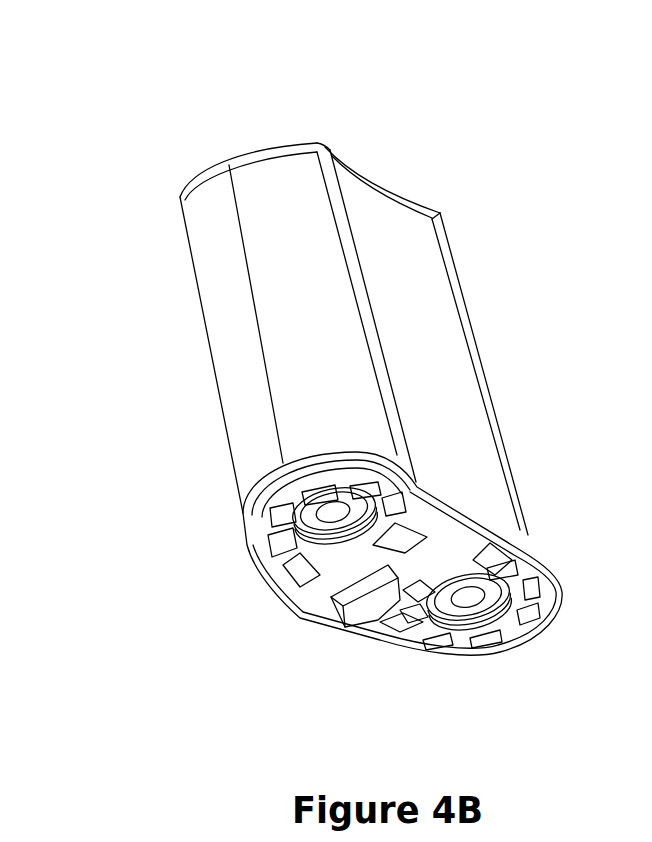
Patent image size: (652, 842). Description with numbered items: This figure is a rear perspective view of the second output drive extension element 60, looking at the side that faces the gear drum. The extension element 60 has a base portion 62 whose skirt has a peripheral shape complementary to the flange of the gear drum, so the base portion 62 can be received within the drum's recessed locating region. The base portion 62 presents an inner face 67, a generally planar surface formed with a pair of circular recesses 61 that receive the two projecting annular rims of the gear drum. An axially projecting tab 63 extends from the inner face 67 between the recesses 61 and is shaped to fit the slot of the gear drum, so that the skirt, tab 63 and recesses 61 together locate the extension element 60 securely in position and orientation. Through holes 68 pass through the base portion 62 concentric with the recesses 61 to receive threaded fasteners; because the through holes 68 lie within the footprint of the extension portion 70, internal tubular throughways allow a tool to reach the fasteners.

The second output drive extension element 60 is at (444, 155).
The extension portion 70 is at (213, 247).
The base portion 62 is at (560, 570).
The inner face 67 is at (270, 565).
The circular recesses 61 is at (315, 530).
The through holes 68 is at (333, 517).
The axially projecting tab 63 is at (365, 603).